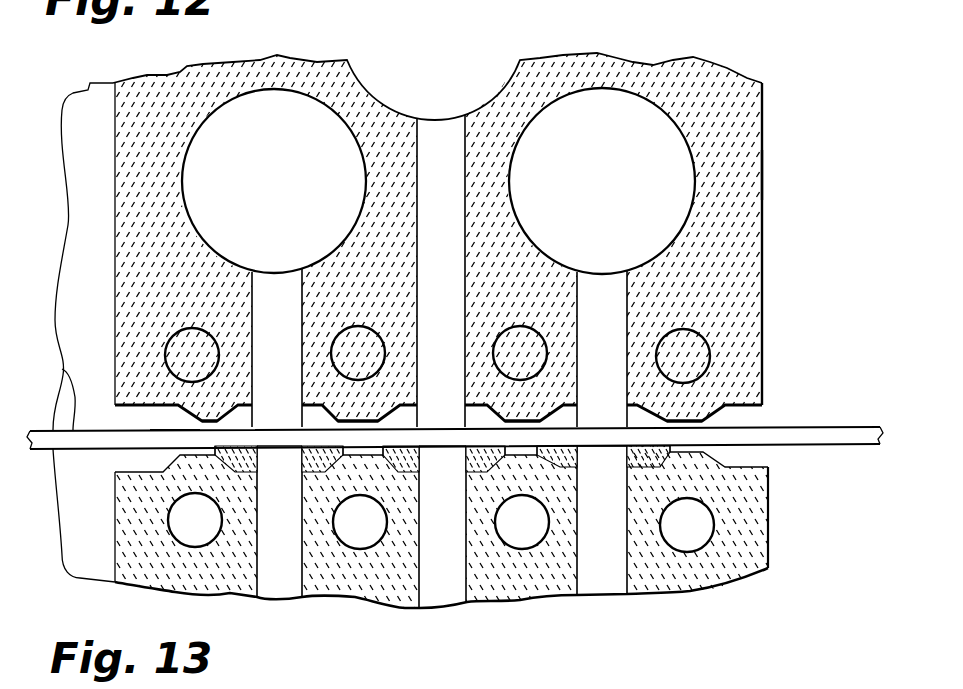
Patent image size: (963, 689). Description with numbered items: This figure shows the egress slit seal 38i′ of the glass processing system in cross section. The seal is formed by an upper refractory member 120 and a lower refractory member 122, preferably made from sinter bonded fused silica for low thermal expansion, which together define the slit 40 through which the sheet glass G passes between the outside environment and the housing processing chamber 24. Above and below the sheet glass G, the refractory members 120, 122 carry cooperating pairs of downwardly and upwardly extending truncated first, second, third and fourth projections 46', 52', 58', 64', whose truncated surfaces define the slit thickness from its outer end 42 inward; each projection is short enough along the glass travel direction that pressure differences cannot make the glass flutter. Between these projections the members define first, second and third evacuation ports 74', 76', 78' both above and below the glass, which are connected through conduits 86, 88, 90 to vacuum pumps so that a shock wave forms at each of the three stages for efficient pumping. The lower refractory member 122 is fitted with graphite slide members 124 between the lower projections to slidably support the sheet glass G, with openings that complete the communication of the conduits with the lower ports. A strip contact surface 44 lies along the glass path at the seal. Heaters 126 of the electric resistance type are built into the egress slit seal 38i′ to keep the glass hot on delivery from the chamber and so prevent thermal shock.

The housing processing chamber 24 is at (87, 240).
The sheet glass G is at (62, 369).
The strip contact surface 44 is at (178, 432).
The fourth projection 64' is at (166, 241).
The third projection 58' is at (334, 238).
The second projection 52' is at (504, 237).
The slit 40 is at (652, 455).
The third evacuation port 78' is at (206, 482).
The second evacuation port 76' is at (382, 488).
The first evacuation port 74' is at (545, 485).
The slide members 124 is at (378, 420).
The first projection 46' is at (530, 455).
The outer end of the slit 42 is at (690, 428).
The egress slit seal 38i′ is at (795, 153).
The upper refractory member 120 is at (790, 217).
The lower refractory member 122 is at (790, 516).
The conduit 90 is at (222, 108).
The conduit 88 is at (520, 62).
The conduit 86 is at (573, 97).
The heaters 126 is at (175, 366).